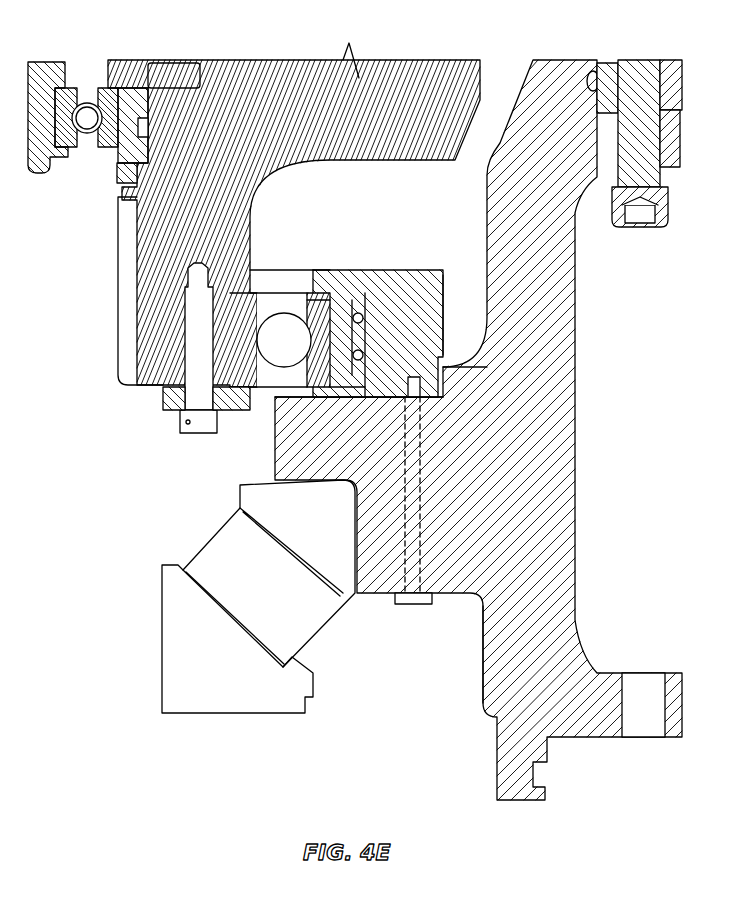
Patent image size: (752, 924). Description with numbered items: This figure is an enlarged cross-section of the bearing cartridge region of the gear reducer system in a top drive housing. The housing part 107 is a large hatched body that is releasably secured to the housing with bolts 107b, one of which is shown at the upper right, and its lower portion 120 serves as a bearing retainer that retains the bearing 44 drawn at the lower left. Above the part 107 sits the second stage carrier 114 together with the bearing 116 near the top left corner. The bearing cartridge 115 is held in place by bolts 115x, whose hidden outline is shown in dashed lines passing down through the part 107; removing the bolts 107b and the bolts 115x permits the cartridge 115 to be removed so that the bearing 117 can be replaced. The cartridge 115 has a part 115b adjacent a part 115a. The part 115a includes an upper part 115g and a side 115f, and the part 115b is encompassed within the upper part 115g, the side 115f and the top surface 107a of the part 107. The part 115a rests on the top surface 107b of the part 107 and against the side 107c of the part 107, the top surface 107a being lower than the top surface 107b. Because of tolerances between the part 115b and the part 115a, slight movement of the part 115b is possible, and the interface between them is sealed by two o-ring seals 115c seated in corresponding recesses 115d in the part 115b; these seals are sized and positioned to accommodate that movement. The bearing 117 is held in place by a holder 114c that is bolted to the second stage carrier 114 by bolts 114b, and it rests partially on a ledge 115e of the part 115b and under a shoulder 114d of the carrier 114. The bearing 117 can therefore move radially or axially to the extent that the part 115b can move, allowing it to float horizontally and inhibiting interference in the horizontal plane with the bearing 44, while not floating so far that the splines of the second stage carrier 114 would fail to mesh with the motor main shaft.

The bearing 44 is at (173, 647).
The part 107 is at (572, 536).
The top surface 107a is at (427, 400).
The bolts / top surface 107b is at (650, 222).
The side 107c is at (440, 387).
The second stage carrier 114 is at (143, 213).
The bolts 114b is at (182, 425).
The holder 114c is at (165, 397).
The shoulder 114d is at (250, 290).
The bearing cartridge 115 is at (382, 268).
The part 115a is at (440, 278).
The part 115b is at (330, 312).
The o-ring seals 115c is at (355, 314).
The recesses 115d is at (364, 318).
The ledge 115e is at (350, 364).
The side 115f is at (363, 338).
The upper part 115g is at (327, 275).
The bolts 115x is at (413, 607).
The bearing 116 is at (72, 90).
The bearing 117 is at (268, 340).
The lower portion 120 is at (488, 640).